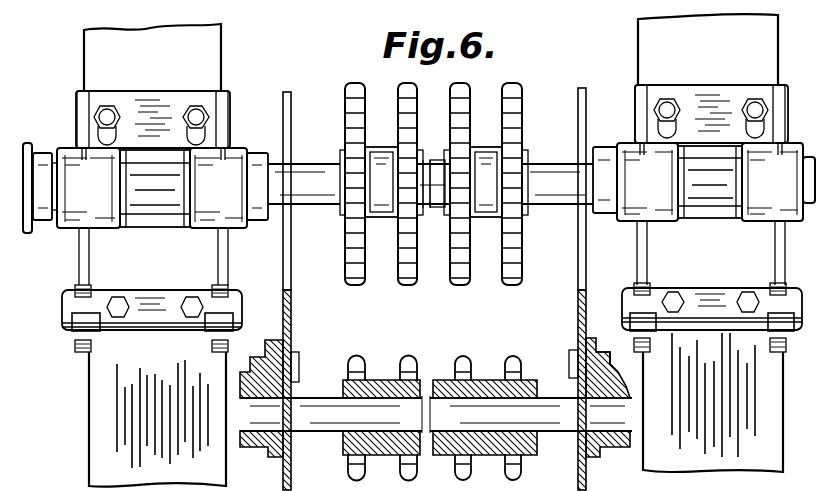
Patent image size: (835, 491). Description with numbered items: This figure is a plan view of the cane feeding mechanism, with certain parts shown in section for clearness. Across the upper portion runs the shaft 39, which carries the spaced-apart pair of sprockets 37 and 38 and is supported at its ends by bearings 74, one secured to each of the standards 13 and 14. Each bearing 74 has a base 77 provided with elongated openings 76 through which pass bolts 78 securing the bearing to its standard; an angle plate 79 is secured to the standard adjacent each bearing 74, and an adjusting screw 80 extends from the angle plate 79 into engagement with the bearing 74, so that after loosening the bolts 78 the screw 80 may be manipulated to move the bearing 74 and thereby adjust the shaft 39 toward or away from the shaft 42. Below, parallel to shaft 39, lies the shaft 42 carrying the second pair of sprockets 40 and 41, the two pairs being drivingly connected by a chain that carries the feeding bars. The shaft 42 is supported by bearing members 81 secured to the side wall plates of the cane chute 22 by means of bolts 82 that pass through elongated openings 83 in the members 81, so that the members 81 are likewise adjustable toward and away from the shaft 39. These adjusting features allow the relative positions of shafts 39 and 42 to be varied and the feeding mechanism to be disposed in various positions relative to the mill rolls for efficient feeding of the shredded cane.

The standard 13 is at (651, 50).
The standard 14 is at (201, 72).
The cane chute 22 is at (578, 292).
The sprocket 37 is at (352, 113).
The sprocket 38 is at (513, 110).
The shaft 39 is at (545, 176).
The sprocket 40 is at (356, 373).
The sprocket 41 is at (515, 364).
The shaft 42 is at (545, 395).
The bearing 74 is at (637, 165).
The elongated opening 76 is at (779, 262).
The base 77 is at (740, 92).
The bolt 78 is at (758, 108).
The angle plate 79 is at (748, 317).
The adjusting screw 80 is at (787, 344).
The bearing member 81 is at (592, 338).
The bolt 82 is at (605, 352).
The elongated opening 83 is at (275, 342).